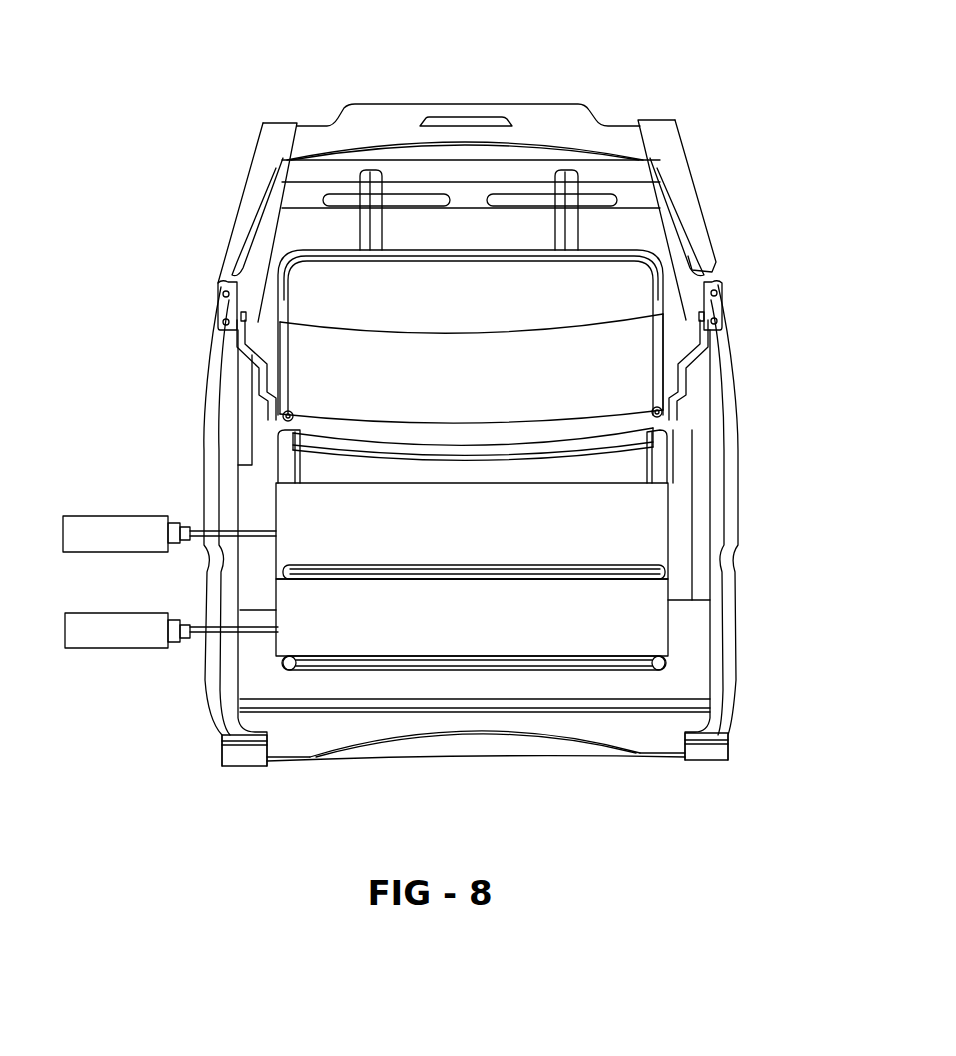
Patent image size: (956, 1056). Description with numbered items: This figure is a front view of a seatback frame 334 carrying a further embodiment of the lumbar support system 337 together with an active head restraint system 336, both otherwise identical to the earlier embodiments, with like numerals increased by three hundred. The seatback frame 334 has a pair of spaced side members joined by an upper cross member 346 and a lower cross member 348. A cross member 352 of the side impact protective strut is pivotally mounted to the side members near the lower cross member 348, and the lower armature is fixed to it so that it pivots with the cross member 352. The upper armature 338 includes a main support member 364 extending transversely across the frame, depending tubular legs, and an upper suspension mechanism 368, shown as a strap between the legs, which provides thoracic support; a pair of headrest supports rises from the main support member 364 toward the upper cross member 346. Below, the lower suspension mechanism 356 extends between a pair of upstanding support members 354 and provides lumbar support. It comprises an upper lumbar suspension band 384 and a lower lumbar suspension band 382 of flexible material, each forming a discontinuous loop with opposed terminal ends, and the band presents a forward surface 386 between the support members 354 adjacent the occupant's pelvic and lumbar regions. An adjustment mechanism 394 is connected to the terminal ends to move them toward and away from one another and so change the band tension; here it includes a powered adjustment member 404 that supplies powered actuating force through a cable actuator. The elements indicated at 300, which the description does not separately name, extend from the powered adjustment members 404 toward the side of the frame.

The rod 300 is at (262, 537).
The seatback frame 334 is at (704, 127).
The active head restraint system 336 is at (646, 231).
The lumbar support system 337 is at (750, 607).
The upper armature 338 is at (268, 273).
The upper cross member 346 is at (493, 118).
The lower cross member 348 is at (545, 757).
The cross member 352 is at (577, 700).
The upstanding support members 354 is at (300, 470).
The lower suspension mechanism 356 is at (268, 493).
The main support member 364 is at (458, 260).
The upper suspension mechanism 368 is at (453, 343).
The lower lumbar suspension band 382 is at (682, 643).
The upper lumbar suspension band 384 is at (680, 513).
The forward surface 386 is at (490, 500).
The adjustment mechanism 394 is at (108, 557).
The powered adjustment member 404 is at (88, 521).